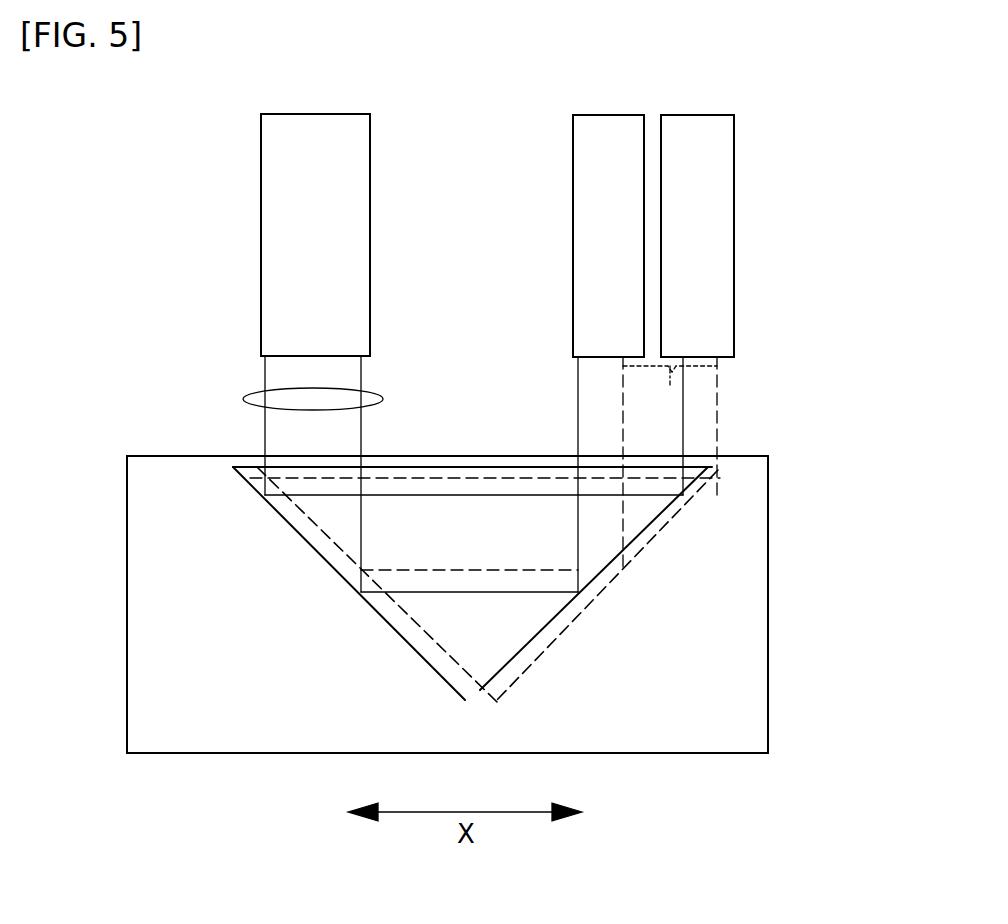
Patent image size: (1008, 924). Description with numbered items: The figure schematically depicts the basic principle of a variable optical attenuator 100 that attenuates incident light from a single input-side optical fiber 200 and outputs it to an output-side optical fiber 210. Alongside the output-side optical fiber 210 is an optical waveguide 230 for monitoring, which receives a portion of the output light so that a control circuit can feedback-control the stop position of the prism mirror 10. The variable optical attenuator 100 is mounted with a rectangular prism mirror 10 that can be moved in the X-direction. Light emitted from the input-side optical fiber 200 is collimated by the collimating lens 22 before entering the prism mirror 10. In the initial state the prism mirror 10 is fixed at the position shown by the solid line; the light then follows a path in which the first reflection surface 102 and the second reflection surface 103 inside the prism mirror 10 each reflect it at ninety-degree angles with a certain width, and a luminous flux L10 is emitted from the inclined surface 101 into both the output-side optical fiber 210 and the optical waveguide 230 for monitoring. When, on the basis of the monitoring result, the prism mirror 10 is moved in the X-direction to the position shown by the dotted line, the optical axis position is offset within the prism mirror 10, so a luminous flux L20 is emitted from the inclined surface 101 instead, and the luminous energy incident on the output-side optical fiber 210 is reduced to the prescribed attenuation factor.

The variable optical attenuator 100 is at (778, 630).
The prism mirror 10 is at (476, 550).
The inclined surface 101 is at (425, 467).
The first reflection surface 102 is at (322, 560).
The second reflection surface 103 is at (568, 600).
The input-side optical fiber 200 is at (290, 208).
The collimating lens 22 is at (250, 398).
The output-side optical fiber 210 is at (573, 188).
The optical waveguide for monitoring 230 is at (734, 210).
The luminous flux L10 is at (681, 448).
The luminous flux L20 is at (668, 383).